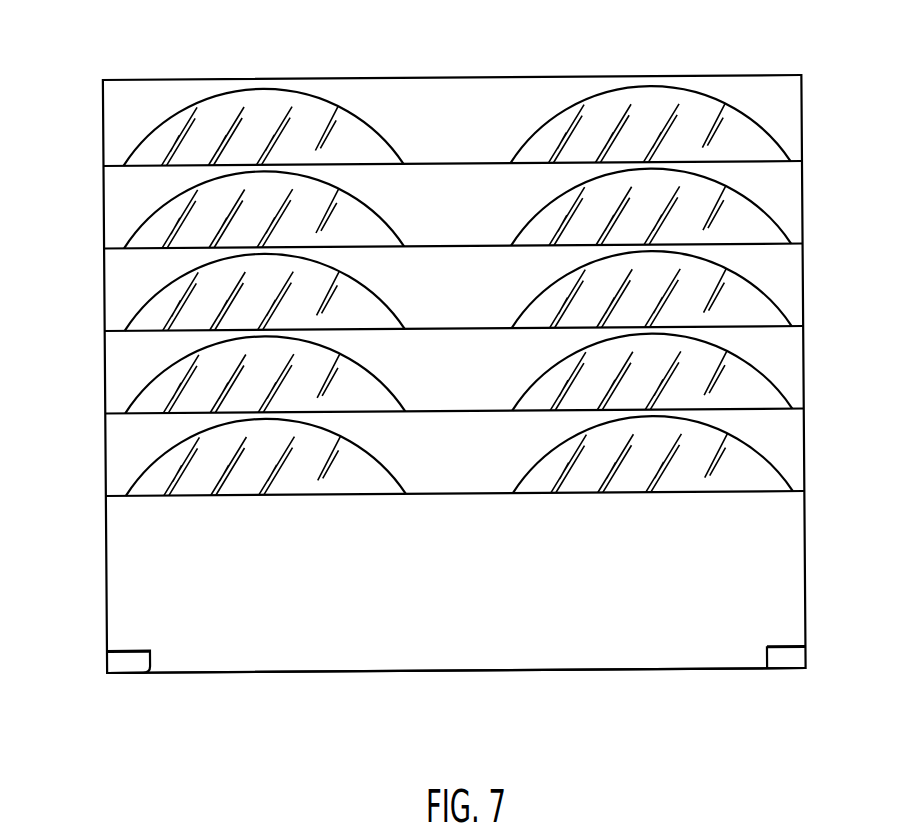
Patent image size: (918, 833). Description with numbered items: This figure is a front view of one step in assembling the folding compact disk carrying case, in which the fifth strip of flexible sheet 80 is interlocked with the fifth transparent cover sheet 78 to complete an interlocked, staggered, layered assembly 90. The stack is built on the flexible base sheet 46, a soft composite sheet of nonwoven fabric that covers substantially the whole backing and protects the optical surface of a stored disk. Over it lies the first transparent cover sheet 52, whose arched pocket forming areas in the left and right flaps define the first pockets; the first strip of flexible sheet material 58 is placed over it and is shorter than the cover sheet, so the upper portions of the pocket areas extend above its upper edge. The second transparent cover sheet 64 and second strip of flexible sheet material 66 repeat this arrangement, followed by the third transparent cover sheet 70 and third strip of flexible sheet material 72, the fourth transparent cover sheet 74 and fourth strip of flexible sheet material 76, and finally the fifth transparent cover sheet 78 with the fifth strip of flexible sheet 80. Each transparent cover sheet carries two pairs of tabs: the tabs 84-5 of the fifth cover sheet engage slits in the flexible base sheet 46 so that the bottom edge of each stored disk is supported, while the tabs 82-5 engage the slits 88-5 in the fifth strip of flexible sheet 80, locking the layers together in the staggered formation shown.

The interlocked, staggered, layered assembly 90 is at (450, 79).
The flexible base sheet 46 is at (140, 114).
The first transparent cover sheet 52 is at (145, 142).
The first strip of flexible sheet material 58 is at (128, 196).
The second transparent cover sheet 64 is at (140, 238).
The second strip of flexible sheet material 66 is at (120, 280).
The third transparent cover sheet 70 is at (145, 317).
The third strip of flexible sheet material 72 is at (128, 361).
The fourth transparent cover sheet 74 is at (150, 400).
The fourth strip of flexible sheet material 76 is at (152, 441).
The fifth transparent cover sheet 78 is at (112, 487).
The fifth strip of flexible sheet 80 is at (152, 527).
The interlockable tab of the fifth transparent cover sheet 82-5 is at (120, 673).
The interlockable tab of the fifth transparent cover sheet 84-5 is at (795, 657).
The slit of the fifth strip of flexible sheet 88-5 is at (130, 651).